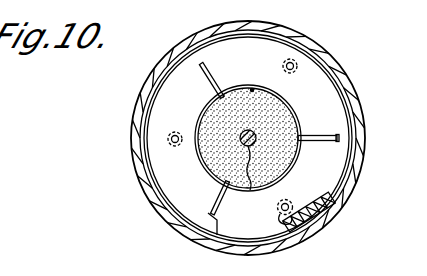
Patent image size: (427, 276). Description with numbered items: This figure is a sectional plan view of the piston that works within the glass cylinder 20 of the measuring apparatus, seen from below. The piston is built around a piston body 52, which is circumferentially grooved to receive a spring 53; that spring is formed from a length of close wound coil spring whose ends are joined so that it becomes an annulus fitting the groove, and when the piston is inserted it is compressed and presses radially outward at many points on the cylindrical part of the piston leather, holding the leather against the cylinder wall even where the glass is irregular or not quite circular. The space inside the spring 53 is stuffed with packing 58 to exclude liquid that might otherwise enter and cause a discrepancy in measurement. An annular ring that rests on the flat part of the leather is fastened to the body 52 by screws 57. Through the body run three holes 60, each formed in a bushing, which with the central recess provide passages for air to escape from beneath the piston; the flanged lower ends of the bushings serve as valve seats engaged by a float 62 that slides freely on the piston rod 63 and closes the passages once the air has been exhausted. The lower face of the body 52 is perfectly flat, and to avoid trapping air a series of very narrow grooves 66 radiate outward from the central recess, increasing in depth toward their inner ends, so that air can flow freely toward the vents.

The cylinder 20 is at (178, 229).
The piston body 52 is at (163, 180).
The spring 53 is at (314, 222).
The screws 57 is at (170, 141).
The packing 58 is at (333, 221).
The holes 60 is at (289, 125).
The float 62 is at (252, 90).
The piston rod 63 is at (250, 190).
The grooves 66 is at (213, 85).